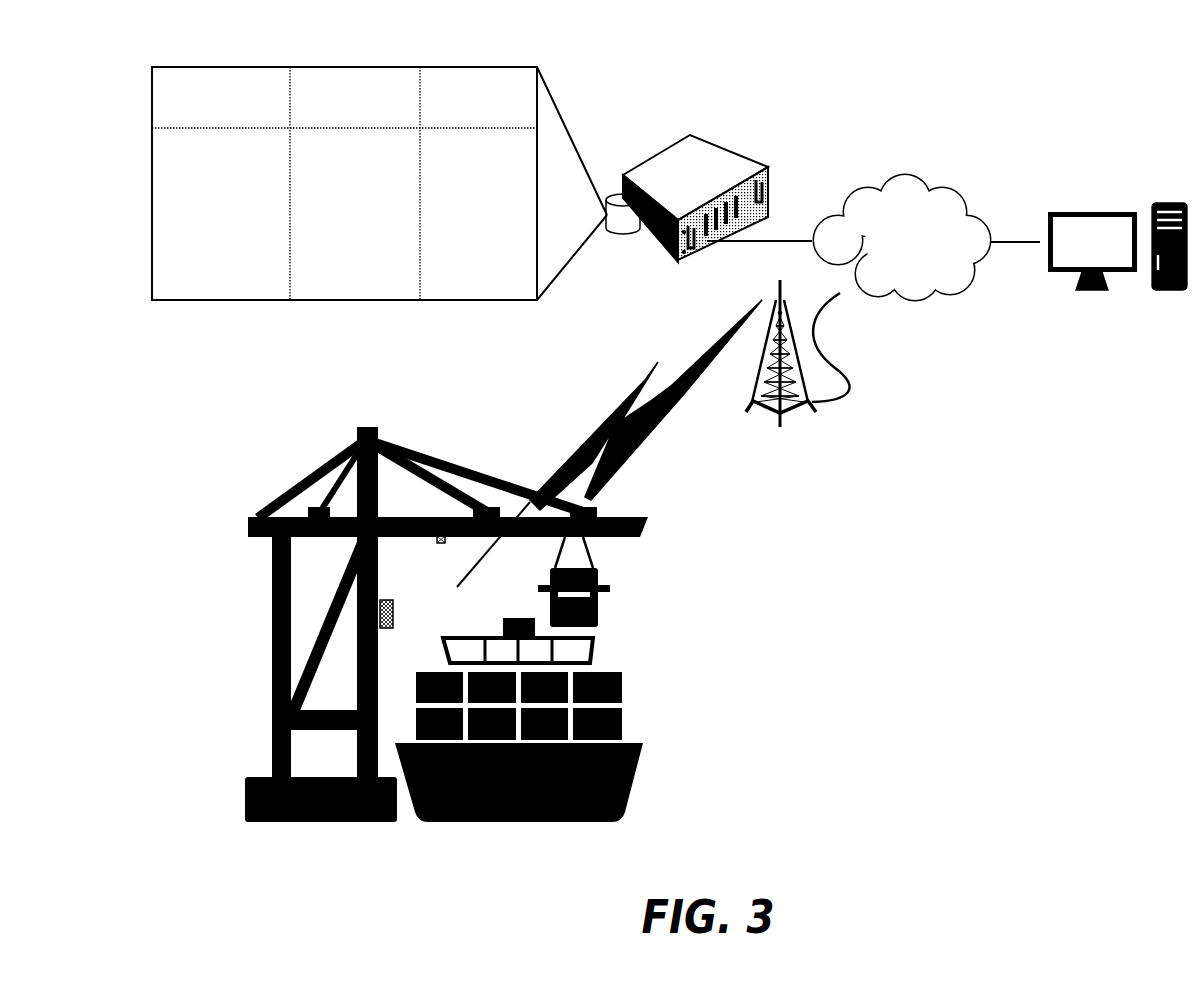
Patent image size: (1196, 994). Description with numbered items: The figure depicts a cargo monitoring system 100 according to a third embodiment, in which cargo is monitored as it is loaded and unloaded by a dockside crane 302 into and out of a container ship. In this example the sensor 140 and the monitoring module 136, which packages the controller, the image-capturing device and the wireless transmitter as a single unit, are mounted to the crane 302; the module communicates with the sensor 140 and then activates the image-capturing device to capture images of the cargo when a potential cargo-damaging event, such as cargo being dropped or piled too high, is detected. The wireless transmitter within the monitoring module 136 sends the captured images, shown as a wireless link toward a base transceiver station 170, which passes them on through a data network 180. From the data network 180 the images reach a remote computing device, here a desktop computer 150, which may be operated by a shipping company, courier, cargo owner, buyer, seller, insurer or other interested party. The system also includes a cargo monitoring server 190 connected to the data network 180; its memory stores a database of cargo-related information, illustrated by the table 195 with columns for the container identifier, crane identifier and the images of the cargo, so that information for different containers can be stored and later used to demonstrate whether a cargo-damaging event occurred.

The cargo monitoring system 100 is at (845, 45).
The database record table 195 is at (233, 67).
The cargo monitoring server 190 is at (686, 183).
The data network 180 is at (909, 279).
The desktop computer 150 is at (1108, 254).
The base transceiver station 170 is at (784, 415).
The crane 302 is at (252, 516).
The sensor 140 is at (440, 545).
The monitoring module 136 is at (394, 613).